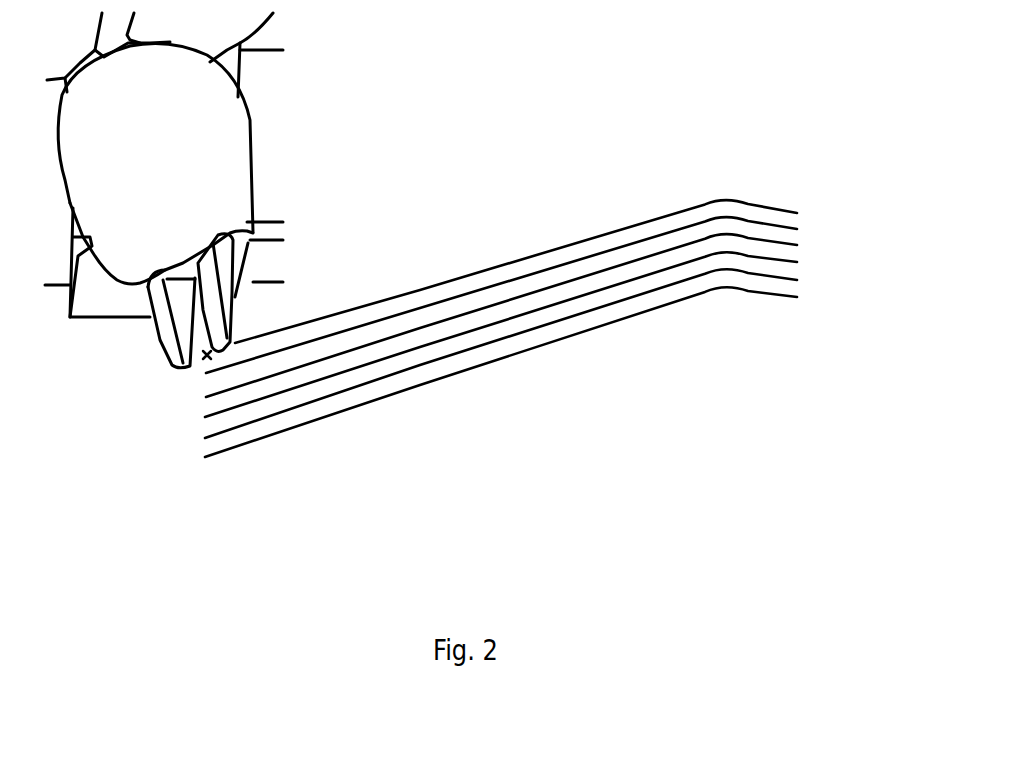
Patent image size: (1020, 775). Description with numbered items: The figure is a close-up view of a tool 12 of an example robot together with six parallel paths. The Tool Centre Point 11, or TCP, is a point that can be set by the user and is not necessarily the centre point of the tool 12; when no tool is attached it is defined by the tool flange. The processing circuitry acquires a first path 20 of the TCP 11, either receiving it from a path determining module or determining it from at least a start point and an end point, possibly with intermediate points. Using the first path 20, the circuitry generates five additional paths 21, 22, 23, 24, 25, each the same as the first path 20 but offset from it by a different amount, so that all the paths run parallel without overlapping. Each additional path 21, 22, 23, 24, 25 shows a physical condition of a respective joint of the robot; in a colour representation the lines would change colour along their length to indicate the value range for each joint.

The Tool Centre Point 11 is at (198, 371).
The tool 12 is at (185, 153).
The first path 20 is at (813, 211).
The additional path 21 is at (813, 230).
The additional path 22 is at (813, 253).
The additional path 23 is at (814, 277).
The additional path 24 is at (812, 293).
The additional path 25 is at (810, 311).